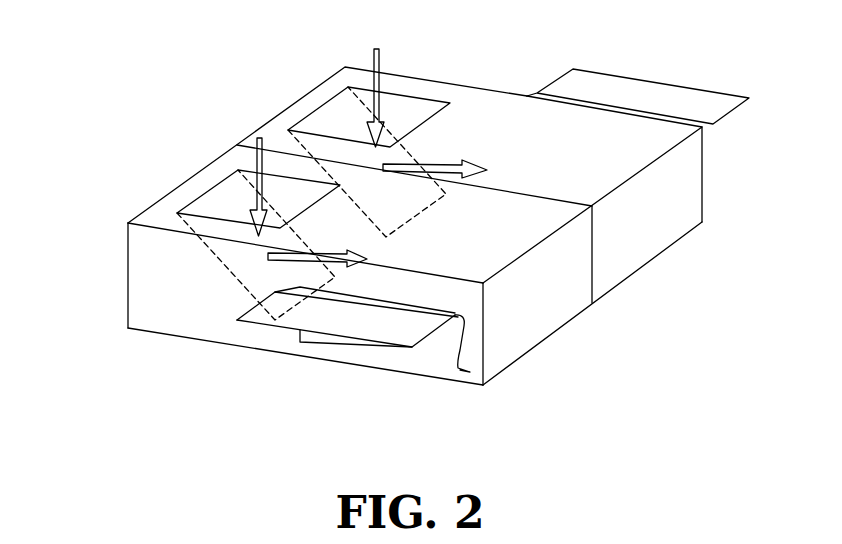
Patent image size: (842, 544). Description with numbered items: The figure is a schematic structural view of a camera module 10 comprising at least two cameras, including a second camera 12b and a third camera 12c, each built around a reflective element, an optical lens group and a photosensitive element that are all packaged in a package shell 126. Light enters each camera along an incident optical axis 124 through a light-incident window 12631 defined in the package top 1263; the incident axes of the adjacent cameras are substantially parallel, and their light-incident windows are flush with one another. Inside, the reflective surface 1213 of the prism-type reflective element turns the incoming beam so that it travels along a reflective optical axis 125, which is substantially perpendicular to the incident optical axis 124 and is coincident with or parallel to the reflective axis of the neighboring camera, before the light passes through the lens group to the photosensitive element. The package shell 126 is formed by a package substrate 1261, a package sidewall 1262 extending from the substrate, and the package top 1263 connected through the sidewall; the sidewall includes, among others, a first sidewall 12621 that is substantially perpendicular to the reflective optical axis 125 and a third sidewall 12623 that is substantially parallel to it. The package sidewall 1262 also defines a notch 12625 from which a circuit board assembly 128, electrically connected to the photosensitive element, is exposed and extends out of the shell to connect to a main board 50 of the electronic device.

The camera module 10 is at (228, 43).
The incident optical axis 124 is at (250, 196).
The reflective surface 1213 is at (205, 254).
The reflective optical axis 125 is at (300, 256).
The package shell 126 is at (616, 347).
The package substrate 1261 is at (190, 340).
The package sidewall 1262 is at (133, 310).
The package top 1263 is at (150, 220).
The light-incident window 12631 is at (213, 202).
The first sidewall 12621 is at (495, 345).
The third sidewall 12623 is at (160, 313).
The notch 12625 is at (462, 365).
The circuit board assembly 128 is at (447, 352).
The main board 50 is at (372, 327).
The second camera 12b is at (643, 245).
The third camera 12c is at (522, 327).